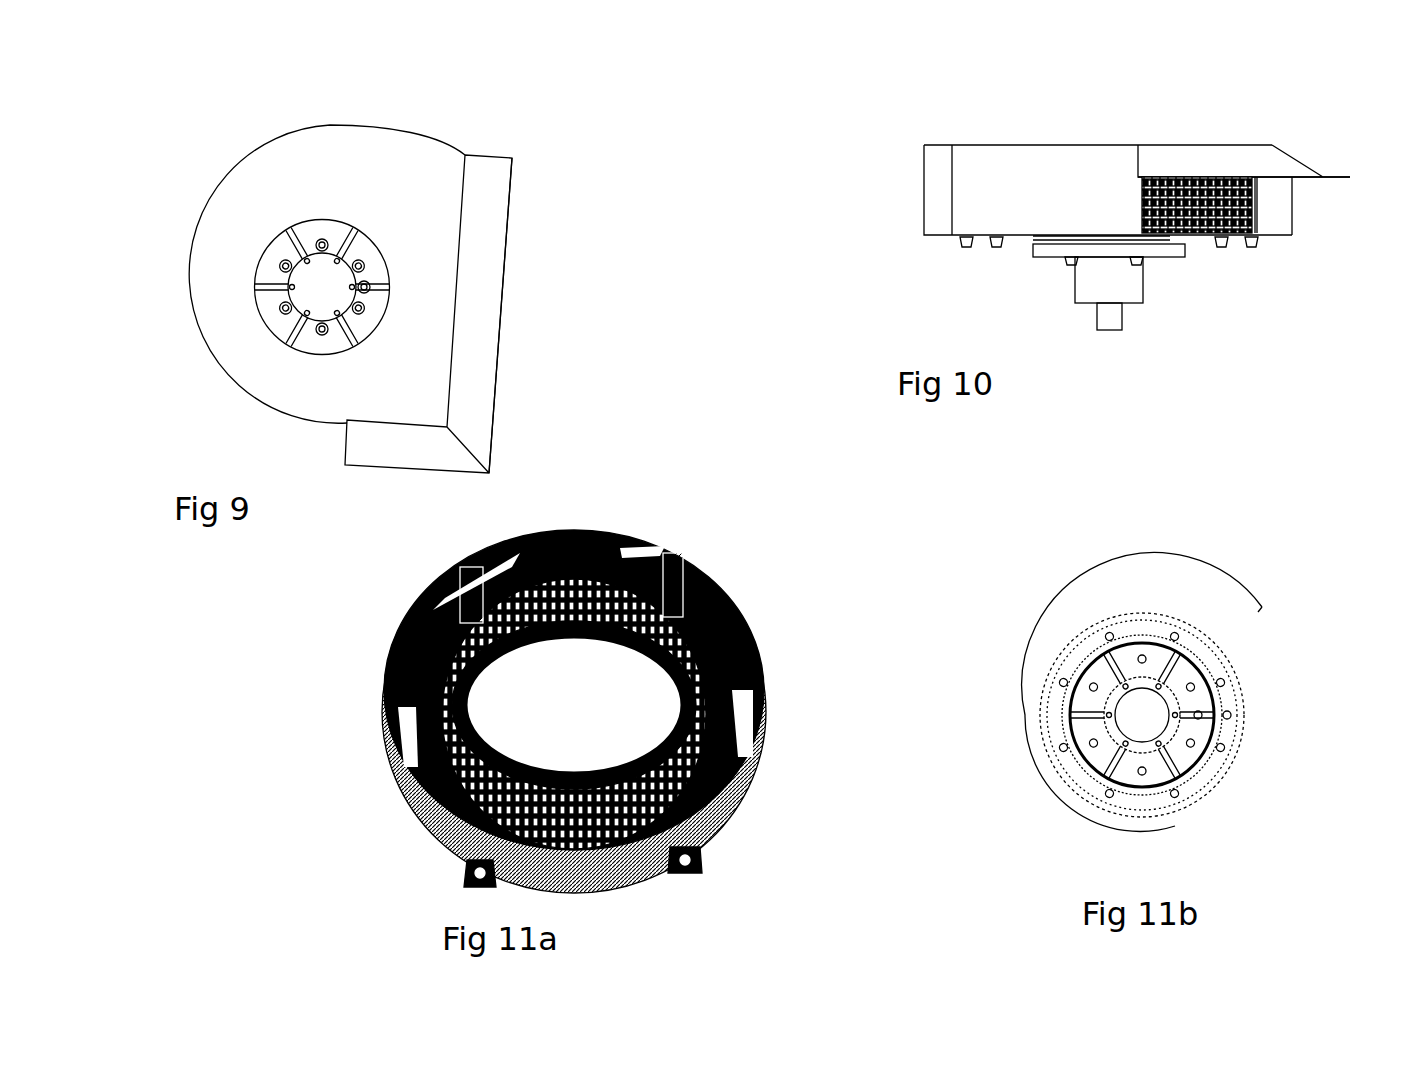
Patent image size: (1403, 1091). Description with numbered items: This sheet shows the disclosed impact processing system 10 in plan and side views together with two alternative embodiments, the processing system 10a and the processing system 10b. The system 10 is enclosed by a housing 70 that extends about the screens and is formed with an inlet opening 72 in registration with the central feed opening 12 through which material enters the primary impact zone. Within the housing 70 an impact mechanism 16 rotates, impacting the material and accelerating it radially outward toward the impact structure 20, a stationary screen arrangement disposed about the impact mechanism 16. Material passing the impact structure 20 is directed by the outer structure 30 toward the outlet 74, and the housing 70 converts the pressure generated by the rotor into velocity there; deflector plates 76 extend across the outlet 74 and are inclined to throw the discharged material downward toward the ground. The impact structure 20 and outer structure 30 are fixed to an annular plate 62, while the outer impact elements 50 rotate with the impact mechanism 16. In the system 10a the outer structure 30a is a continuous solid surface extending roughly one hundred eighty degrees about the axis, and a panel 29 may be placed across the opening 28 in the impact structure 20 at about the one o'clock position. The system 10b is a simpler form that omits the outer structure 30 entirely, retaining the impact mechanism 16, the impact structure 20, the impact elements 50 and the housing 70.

In FIG. 9, the impact processing system 10 is at (352, 302).
In FIG. 10, the impact processing system 10 is at (1087, 194).
In FIG. 11A, the processing system (second embodiment) 10a is at (489, 666).
In FIG. 11B, the processing system (third embodiment) 10b is at (1160, 661).
In FIG. 9, the central feed opening 12 is at (268, 262).
In FIG. 11A, the central feed opening 12 is at (580, 752).
In FIG. 11B, the impact mechanism 16 is at (1140, 715).
In FIG. 11A, the impact structure 20 is at (582, 530).
In FIG. 11B, the impact structure 20 is at (1083, 760).
In FIG. 11A, the opening 28 is at (437, 837).
In FIG. 11A, the panel 29 is at (680, 550).
In FIG. 10, the outer structure 30 is at (1230, 237).
In FIG. 11A, the outer structure (solid) 30a is at (733, 810).
In FIG. 11B, the impact elements 50 is at (1177, 800).
In FIG. 11A, the annular plate 62 is at (742, 605).
In FIG. 9, the housing 70 is at (187, 345).
In FIG. 10, the housing 70 is at (965, 205).
In FIG. 11B, the housing 70 is at (1047, 635).
In FIG. 9, the inlet opening 72 is at (323, 222).
In FIG. 9, the outlet 74 is at (510, 325).
In FIG. 10, the outlet 74 is at (1302, 213).
In FIG. 11B, the outlet 74 is at (1268, 705).
In FIG. 9, the deflector plates 76 is at (483, 237).
In FIG. 10, the deflector plates 76 is at (1348, 177).